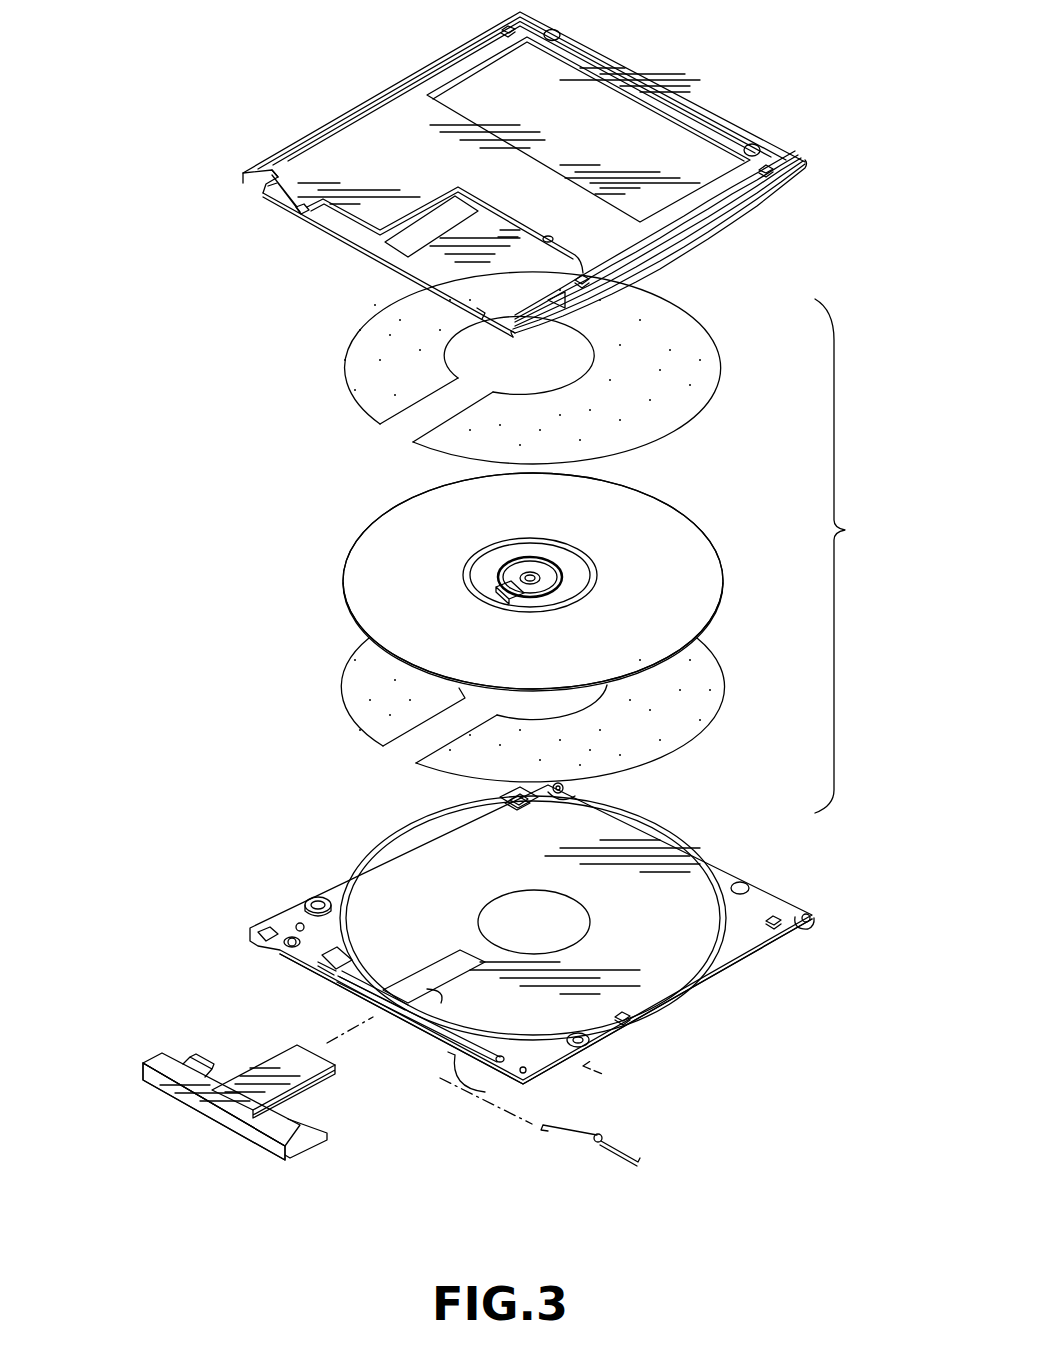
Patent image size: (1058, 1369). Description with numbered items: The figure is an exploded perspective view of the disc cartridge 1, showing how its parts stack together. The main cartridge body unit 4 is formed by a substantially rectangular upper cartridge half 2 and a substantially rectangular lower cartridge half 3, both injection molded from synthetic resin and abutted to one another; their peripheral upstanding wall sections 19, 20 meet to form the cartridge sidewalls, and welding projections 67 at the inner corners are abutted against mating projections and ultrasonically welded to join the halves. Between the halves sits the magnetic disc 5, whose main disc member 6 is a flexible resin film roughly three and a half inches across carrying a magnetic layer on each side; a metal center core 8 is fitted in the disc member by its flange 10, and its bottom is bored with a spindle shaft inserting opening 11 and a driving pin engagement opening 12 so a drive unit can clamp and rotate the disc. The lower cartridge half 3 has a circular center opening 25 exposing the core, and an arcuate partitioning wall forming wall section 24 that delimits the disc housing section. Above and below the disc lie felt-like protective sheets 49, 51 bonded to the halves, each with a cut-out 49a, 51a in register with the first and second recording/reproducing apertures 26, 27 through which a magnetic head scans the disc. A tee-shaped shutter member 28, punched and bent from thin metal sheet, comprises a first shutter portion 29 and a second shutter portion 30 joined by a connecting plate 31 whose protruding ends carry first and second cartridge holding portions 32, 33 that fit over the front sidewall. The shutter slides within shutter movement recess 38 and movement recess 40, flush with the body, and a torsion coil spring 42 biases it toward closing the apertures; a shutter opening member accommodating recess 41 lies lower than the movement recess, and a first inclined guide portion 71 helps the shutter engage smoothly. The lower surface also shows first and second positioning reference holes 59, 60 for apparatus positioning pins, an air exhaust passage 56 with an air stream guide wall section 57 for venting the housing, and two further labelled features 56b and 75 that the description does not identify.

The disc cartridge 1 is at (304, 72).
The upper cartridge half 2 is at (746, 210).
The lower cartridge half 3 is at (765, 895).
The main cartridge body unit 4 is at (842, 556).
The magnetic disc 5 is at (657, 522).
The main disc member 6 is at (362, 548).
The center core 8 is at (595, 574).
The flange 10 is at (470, 565).
The spindle shaft inserting opening 11 is at (540, 586).
The driving pin engagement opening 12 is at (505, 600).
The upstanding wall section 19 is at (786, 182).
The upstanding wall section 20 is at (742, 968).
The partitioning wall forming wall section 24 is at (350, 900).
The center opening 25 is at (588, 918).
The first recording/reproducing aperture 26 is at (432, 228).
The second recording/reproducing aperture 27 is at (428, 1010).
The shutter member 28 is at (173, 1172).
The first shutter portion 29 is at (260, 1070).
The second shutter portion 30 is at (315, 1095).
The connecting plate 31 is at (170, 1092).
The first cartridge holding portion 32 is at (293, 1150).
The second cartridge holding portion 33 is at (152, 1062).
The shutter movement recess 38 is at (548, 239).
The movement recess 40 is at (485, 310).
The shutter opening member accommodating recess 41 is at (304, 216).
The torsion coil spring 42 is at (588, 1141).
The protective sheet 49 is at (706, 368).
The cut-out 49a is at (400, 420).
The protective sheet 51 is at (355, 678).
The cut-out 51a is at (398, 753).
The air exhaust passage 56 is at (322, 967).
The guide groove wall 56b is at (403, 988).
The air stream guide wall section 57 is at (345, 968).
The first positioning reference hole 59 is at (575, 1044).
The second positioning reference hole 60 is at (316, 897).
The welding projection 67 is at (580, 790).
The first inclined guide portion 71 is at (488, 792).
The corner tab 75 is at (250, 188).